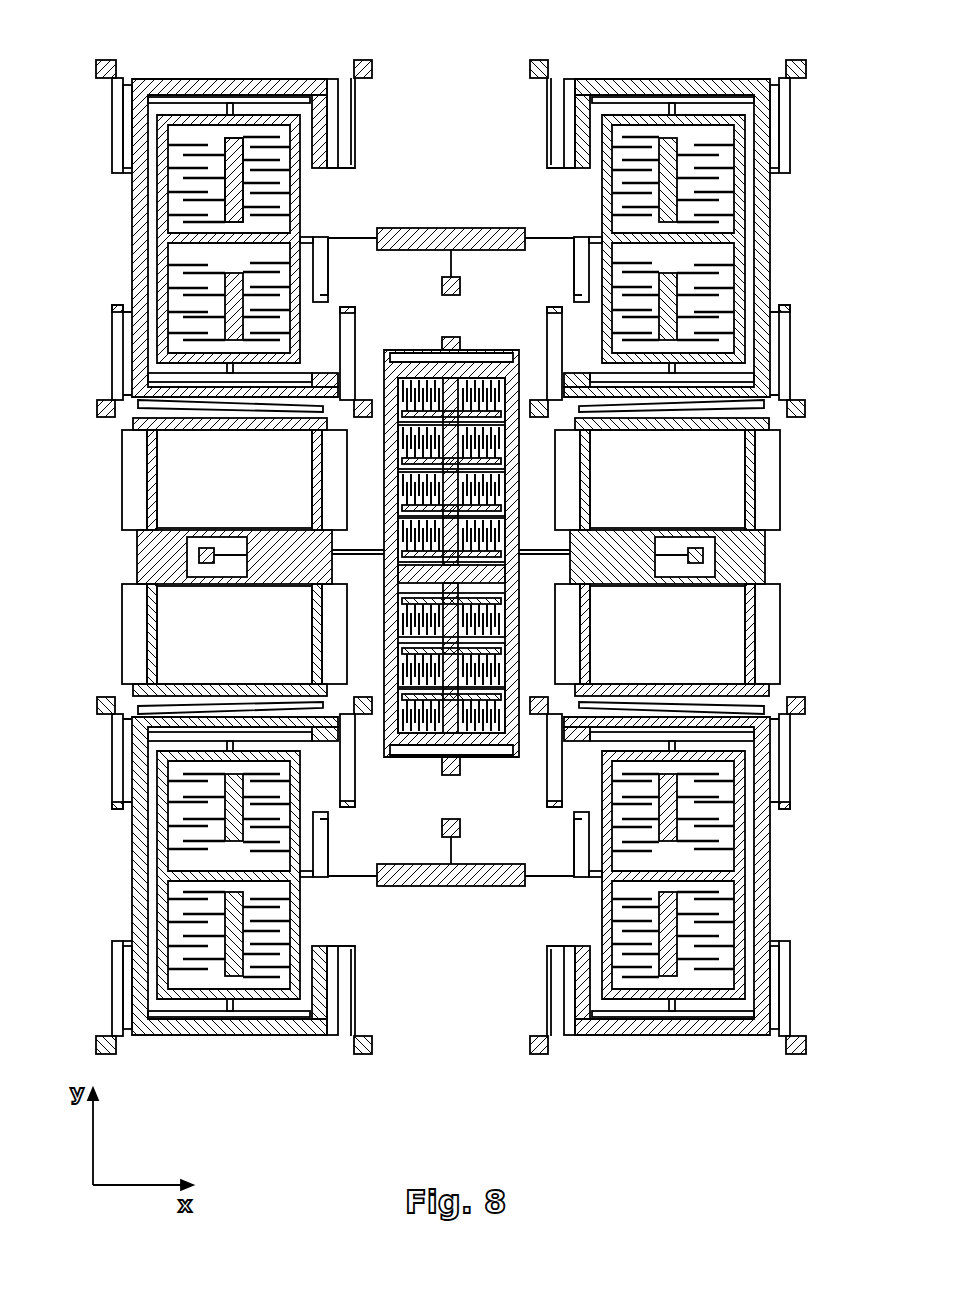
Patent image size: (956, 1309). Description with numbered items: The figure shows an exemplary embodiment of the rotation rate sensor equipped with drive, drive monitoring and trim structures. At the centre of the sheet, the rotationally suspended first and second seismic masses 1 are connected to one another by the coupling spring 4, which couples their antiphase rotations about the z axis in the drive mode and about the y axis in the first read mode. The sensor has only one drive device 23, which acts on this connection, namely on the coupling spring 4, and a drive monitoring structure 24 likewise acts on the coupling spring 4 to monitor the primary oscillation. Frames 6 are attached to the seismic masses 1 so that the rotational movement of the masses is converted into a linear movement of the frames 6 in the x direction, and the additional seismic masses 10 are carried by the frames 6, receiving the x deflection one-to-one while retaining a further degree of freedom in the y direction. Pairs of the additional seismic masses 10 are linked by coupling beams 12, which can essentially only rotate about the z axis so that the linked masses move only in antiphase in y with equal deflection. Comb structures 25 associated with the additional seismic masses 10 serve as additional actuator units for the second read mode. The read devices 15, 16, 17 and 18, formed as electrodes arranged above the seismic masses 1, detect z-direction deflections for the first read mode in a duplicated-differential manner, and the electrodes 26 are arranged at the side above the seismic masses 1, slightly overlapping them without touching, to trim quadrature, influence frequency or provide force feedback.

The seismic mass 1 is at (147, 557).
The coupling spring 4 is at (365, 552).
The frame 6 is at (200, 80).
The additional seismic mass 10 is at (148, 130).
The coupling beam 12 is at (478, 228).
The read device 15 is at (722, 490).
The read device 16 is at (180, 495).
The read device 17 is at (722, 655).
The read device 18 is at (180, 659).
The drive device 23 is at (452, 418).
The drive monitoring structure 24 is at (455, 693).
The comb structure 25 is at (238, 160).
The electrode 26 is at (132, 473).